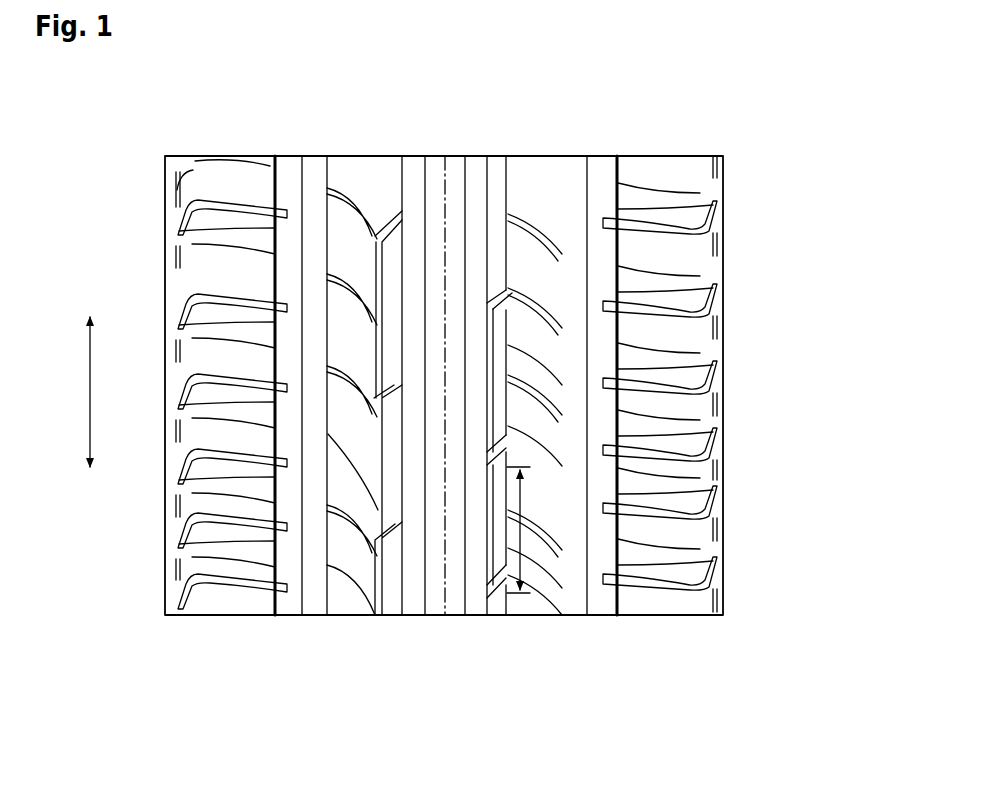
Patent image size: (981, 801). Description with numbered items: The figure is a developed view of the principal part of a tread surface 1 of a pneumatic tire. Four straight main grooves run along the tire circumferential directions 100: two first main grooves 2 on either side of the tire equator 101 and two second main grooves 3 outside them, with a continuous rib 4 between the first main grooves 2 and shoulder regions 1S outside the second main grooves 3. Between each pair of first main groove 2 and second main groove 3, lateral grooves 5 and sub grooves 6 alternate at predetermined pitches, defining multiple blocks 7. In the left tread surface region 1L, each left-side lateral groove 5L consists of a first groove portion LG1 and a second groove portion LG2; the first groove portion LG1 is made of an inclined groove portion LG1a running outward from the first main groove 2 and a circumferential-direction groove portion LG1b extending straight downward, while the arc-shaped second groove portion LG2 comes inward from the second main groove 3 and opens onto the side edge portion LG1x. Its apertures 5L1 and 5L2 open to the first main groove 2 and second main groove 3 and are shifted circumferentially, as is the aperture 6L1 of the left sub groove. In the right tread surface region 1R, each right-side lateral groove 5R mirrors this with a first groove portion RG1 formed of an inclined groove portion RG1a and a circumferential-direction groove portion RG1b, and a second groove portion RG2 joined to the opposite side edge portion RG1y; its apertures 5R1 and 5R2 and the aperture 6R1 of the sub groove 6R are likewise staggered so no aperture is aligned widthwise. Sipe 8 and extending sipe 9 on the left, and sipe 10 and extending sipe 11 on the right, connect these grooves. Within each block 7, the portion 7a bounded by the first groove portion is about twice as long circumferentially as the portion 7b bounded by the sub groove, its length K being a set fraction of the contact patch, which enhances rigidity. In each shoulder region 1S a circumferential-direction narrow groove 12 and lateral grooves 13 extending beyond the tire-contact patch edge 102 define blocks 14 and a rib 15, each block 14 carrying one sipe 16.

The tread surface 1 is at (538, 155).
The tread surface region 1L is at (317, 155).
The tread surface region 1R is at (575, 155).
The shoulder region 1S is at (250, 155).
The first main groove 2 is at (404, 615).
The second main groove 3 is at (310, 615).
The rib 4 is at (433, 615).
The lateral groove 5 is at (377, 615).
The left-side lateral groove 5L is at (371, 696).
The aperture 5L1 is at (365, 405).
The aperture 5L2 is at (335, 455).
The right-side lateral groove 5R is at (552, 393).
The aperture 5R1 is at (495, 580).
The aperture 5R2 is at (540, 470).
The sub groove 6 is at (327, 186).
The sub groove 6R is at (560, 318).
The aperture 6L1 is at (353, 186).
The aperture 6R1 is at (543, 312).
The block 7 is at (297, 615).
The block portion 7a is at (493, 353).
The block portion 7b is at (590, 420).
The sipe 8 is at (382, 242).
The extending sipe 9 is at (355, 185).
The sipe 10 is at (487, 293).
The extending sipe 11 is at (523, 266).
The circumferential-direction narrow groove 12 is at (228, 595).
The lateral groove 13 is at (205, 590).
The block 14 is at (176, 185).
The rib 15 is at (288, 180).
The sipe 16 is at (215, 248).
The tire circumferential direction 100 is at (66, 392).
The tire equator 101 is at (443, 155).
The tire-contact patch edge 102 is at (207, 155).
The length K is at (540, 598).
The first groove portion LG1 is at (350, 459).
The inclined groove portion LG1a is at (372, 343).
The circumferential-direction groove portion LG1b is at (368, 492).
The side edge portion LG1x is at (403, 512).
The second groove portion LG2 is at (339, 543).
The first groove portion RG1 is at (610, 500).
The inclined groove portion RG1a is at (545, 580).
The circumferential-direction groove portion RG1b is at (520, 575).
The opposite side edge portion RG1y is at (530, 373).
The second groove portion RG2 is at (522, 415).